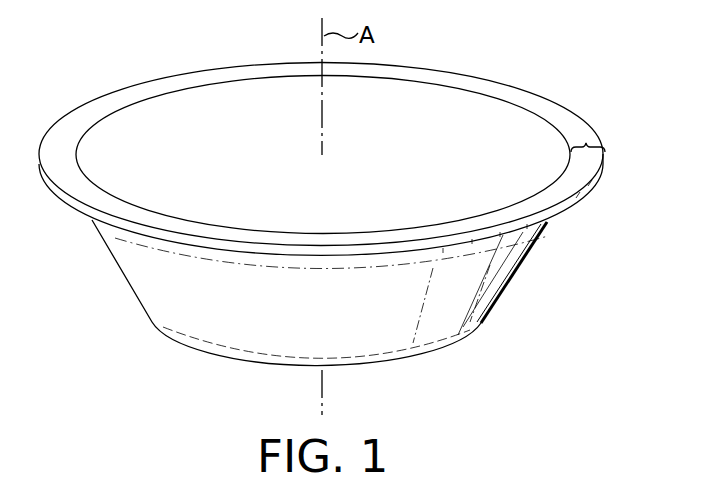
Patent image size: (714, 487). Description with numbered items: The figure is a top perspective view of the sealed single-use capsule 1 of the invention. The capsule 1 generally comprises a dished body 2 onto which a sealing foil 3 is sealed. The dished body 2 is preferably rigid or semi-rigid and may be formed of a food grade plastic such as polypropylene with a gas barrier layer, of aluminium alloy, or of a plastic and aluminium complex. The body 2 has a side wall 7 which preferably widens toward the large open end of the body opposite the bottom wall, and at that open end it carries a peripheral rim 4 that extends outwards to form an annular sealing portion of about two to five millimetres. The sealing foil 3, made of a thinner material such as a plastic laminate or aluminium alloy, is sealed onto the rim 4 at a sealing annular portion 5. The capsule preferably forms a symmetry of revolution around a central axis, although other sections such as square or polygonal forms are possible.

The single-use capsule 1 is at (341, 198).
The dished body 2 is at (489, 282).
The sealing foil 3 is at (443, 106).
The peripheral rim 4 is at (561, 210).
The sealing annular portion 5 is at (586, 143).
The side wall 7 is at (146, 291).